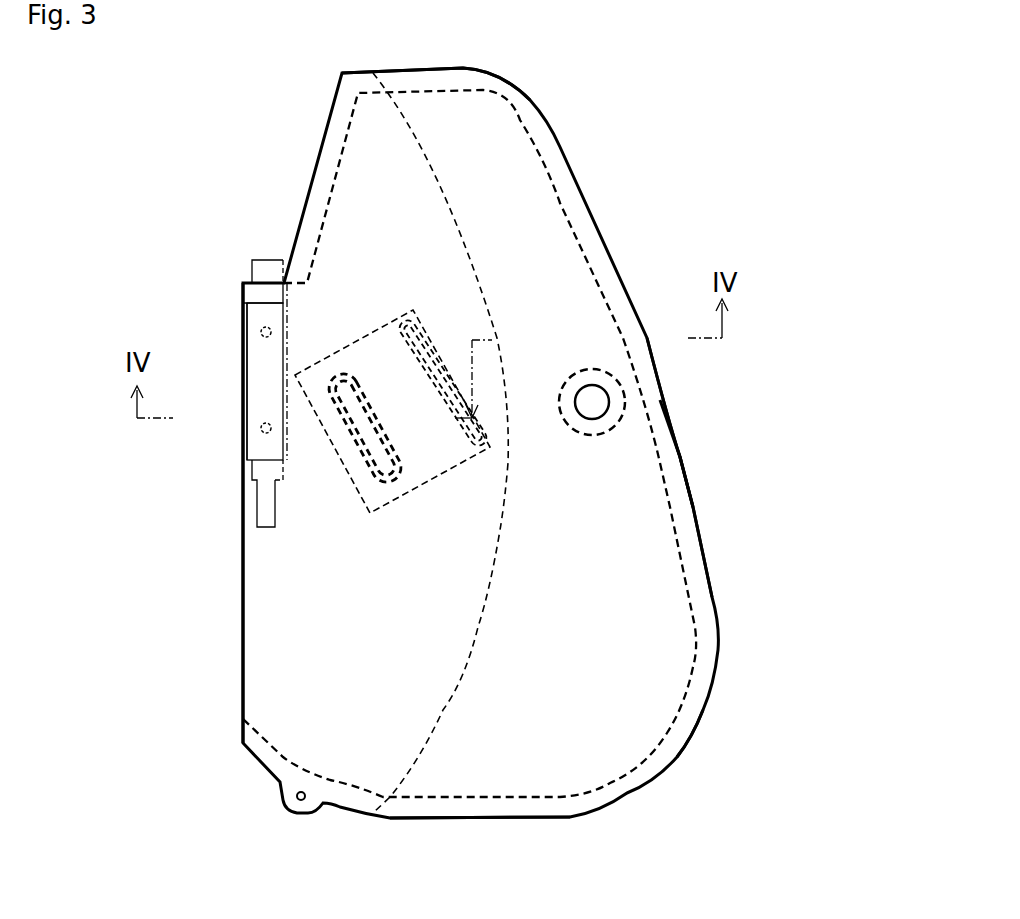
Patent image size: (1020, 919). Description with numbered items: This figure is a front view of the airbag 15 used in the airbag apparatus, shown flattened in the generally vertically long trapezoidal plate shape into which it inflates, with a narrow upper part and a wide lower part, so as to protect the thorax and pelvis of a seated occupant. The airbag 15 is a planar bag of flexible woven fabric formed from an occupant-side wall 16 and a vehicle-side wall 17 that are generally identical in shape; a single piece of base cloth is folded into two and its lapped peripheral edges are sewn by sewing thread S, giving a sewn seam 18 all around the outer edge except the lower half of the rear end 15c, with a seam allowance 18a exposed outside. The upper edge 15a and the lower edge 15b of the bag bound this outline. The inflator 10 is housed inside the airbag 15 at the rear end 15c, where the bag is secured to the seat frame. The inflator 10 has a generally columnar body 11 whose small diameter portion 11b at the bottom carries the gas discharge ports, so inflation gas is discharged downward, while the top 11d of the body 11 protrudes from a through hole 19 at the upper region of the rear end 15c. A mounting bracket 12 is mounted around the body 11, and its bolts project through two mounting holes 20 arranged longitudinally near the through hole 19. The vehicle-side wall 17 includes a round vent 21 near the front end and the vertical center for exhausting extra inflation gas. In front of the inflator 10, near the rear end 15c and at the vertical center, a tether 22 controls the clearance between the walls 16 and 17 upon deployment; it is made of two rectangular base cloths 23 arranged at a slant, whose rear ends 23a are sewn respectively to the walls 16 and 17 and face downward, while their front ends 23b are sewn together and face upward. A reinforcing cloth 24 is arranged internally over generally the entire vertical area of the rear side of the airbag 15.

The inflator 10 is at (229, 363).
The body 11 is at (229, 378).
The small diameter portion 11b is at (265, 512).
The top 11d is at (257, 272).
The mounting bracket 12 is at (255, 438).
The airbag 15 is at (616, 177).
The upper edge of airbag 15a is at (485, 82).
The lower edge of airbag 15b is at (473, 810).
The rear end 15c is at (260, 612).
The occupant-side wall 16 is at (640, 473).
The vehicle-side wall 17 is at (648, 512).
The sewn seam 18 is at (596, 275).
The seam allowance 18a is at (715, 605).
The through hole 19 is at (268, 280).
The mounting holes 20 is at (266, 428).
The round vent 21 is at (592, 412).
The tether 22 is at (428, 493).
The base cloths 23 is at (407, 432).
The rear ends 23a is at (367, 518).
The front ends 23b is at (483, 450).
The reinforcing cloth 24 is at (413, 700).
The sewing thread S is at (663, 737).